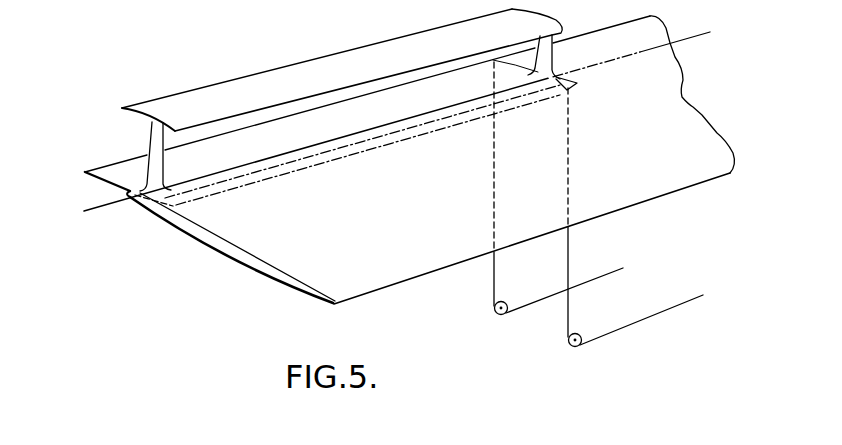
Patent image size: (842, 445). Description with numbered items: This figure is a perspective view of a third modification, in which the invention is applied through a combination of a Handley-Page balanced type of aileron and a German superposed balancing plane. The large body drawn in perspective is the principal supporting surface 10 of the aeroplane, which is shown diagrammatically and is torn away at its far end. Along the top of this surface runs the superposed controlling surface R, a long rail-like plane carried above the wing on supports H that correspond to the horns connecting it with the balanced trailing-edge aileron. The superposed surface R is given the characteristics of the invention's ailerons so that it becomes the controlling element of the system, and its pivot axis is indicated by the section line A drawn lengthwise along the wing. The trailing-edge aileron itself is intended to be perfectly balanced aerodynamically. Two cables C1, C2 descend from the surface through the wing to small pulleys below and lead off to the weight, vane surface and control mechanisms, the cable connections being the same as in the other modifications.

The principal supporting surface 10 is at (409, 160).
The controlling aileron R is at (322, 62).
The rail web / support H is at (225, 142).
The aileron axis A is at (394, 125).
The cable C1 is at (648, 320).
The cable C2 is at (525, 307).